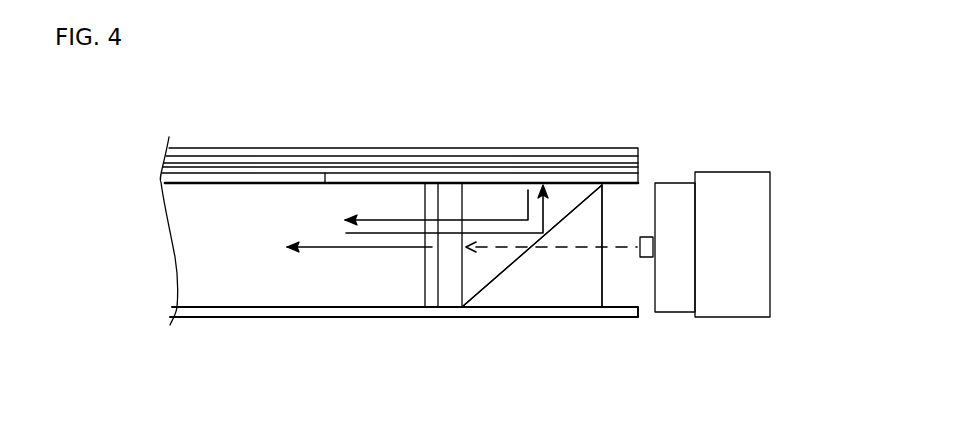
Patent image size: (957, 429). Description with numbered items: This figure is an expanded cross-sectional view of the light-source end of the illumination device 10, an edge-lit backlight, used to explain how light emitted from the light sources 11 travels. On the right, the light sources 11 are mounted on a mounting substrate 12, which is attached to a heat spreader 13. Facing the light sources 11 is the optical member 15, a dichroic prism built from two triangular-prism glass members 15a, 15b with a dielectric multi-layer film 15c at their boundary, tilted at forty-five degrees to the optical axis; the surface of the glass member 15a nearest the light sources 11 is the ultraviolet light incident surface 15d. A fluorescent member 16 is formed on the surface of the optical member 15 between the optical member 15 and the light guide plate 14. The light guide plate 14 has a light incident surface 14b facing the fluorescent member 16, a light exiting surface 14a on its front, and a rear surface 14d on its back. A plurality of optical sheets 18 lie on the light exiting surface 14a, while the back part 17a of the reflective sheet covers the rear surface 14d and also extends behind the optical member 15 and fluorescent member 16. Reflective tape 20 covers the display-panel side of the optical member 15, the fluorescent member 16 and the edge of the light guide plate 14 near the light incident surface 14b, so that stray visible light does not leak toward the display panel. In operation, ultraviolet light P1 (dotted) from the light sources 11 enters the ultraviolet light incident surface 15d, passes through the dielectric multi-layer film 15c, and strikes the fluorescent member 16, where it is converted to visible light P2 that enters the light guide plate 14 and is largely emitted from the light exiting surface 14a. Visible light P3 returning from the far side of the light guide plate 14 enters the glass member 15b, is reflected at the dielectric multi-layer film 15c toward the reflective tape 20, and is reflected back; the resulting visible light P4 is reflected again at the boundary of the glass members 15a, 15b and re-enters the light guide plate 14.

The illumination device 10 is at (778, 133).
The light source 11 is at (643, 258).
The mounting substrate 12 is at (680, 255).
The heat spreader 13 is at (735, 250).
The light guide plate 14 is at (190, 257).
The light exiting surface 14a is at (248, 184).
The light incident surface 14b is at (436, 284).
The rear surface 14d is at (212, 306).
The optical member 15 is at (558, 378).
The glass member 15a is at (533, 293).
The glass member 15b is at (478, 280).
The dielectric multi-layer film 15c is at (567, 220).
The ultraviolet light incident surface 15d is at (603, 258).
The fluorescent member 16 is at (450, 280).
The back part 17a is at (238, 312).
The optical sheet 18 is at (167, 153).
The reflective tape 20 is at (636, 181).
The ultraviolet light P1 is at (570, 248).
The visible light P2 is at (332, 248).
The visible light P3 is at (373, 234).
The visible light P4 is at (383, 220).